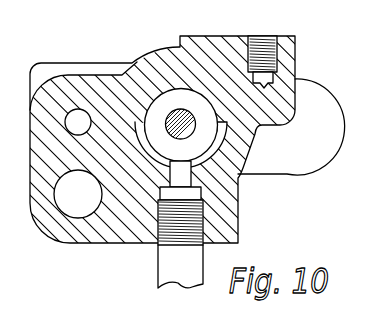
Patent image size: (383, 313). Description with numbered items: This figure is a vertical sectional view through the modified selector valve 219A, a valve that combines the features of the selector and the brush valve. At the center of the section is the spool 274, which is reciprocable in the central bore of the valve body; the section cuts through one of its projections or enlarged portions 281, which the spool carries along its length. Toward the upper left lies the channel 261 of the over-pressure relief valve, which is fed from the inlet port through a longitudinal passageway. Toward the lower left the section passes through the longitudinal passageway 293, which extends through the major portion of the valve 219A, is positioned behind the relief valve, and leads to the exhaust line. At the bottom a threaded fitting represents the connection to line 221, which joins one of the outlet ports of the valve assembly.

The selector valve 219A is at (294, 62).
The channel 261 is at (78, 117).
The longitudinal passageway 293 is at (73, 217).
The enlarged portion 281 is at (180, 100).
The spool 274 is at (185, 112).
The line 221 is at (160, 272).